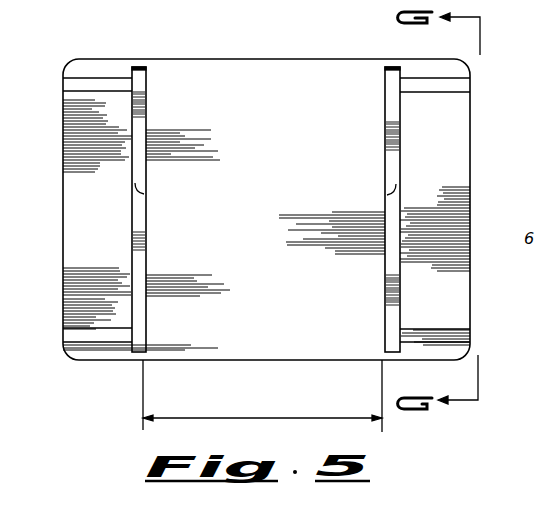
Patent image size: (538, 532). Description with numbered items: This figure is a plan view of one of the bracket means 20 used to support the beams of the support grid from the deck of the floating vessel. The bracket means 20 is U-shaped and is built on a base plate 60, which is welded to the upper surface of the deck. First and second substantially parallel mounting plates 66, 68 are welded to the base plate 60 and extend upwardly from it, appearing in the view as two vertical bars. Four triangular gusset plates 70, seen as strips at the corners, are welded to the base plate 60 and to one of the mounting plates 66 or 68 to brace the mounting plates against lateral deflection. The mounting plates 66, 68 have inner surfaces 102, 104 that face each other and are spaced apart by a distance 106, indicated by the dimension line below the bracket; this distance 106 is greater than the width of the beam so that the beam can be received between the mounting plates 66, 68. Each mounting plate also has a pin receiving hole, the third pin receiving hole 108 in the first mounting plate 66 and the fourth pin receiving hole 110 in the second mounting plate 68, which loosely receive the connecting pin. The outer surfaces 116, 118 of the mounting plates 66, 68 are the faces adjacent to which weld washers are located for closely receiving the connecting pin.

The bracket means 20 is at (252, 52).
The base plate 60 is at (281, 273).
The first mounting plate 66 is at (132, 273).
The second mounting plate 68 is at (400, 278).
The gusset plates 70 is at (104, 78).
The inner surface 102 is at (147, 125).
The inner surface 104 is at (385, 108).
The distance 106 is at (270, 416).
The third pin receiving hole 108 is at (149, 195).
The fourth pin receiving hole 110 is at (382, 194).
The outer surface 116 is at (130, 113).
The outer surface 118 is at (400, 124).